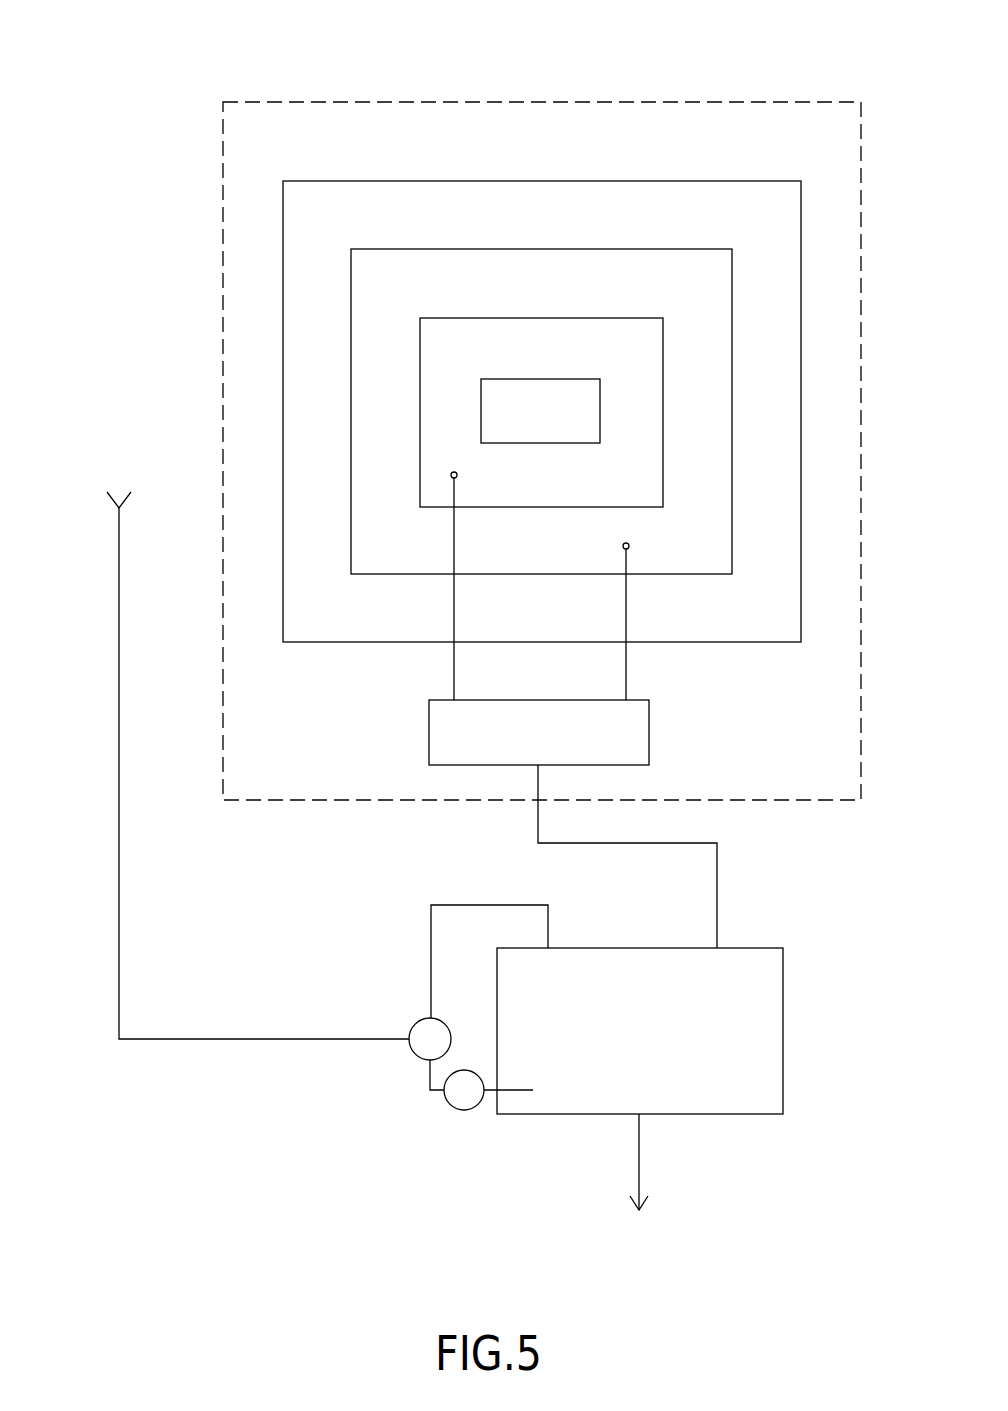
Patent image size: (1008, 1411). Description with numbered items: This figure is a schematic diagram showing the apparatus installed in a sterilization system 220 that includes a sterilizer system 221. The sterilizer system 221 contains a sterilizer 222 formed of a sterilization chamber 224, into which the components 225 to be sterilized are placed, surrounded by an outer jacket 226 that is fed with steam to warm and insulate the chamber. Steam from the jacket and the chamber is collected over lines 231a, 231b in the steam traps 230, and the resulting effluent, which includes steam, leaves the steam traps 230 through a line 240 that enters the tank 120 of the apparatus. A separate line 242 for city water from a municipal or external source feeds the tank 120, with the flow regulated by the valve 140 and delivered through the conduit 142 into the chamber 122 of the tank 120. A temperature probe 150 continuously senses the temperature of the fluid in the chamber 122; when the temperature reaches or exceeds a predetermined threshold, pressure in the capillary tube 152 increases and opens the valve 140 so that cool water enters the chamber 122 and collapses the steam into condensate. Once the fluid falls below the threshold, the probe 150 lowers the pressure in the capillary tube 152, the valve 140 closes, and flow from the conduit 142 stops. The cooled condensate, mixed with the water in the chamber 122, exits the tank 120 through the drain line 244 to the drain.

The tank 120 is at (688, 1031).
The chamber 122 is at (660, 1043).
The valve 140 is at (418, 1022).
The conduit 142 is at (431, 944).
The temperature probe 150 is at (456, 1110).
The capillary tube 152 is at (428, 1076).
The sterilization system 220 is at (132, 178).
The sterilizer system 221 is at (345, 100).
The sterilizer 222 is at (395, 181).
The sterilization chamber 224 is at (455, 282).
The components 225 is at (565, 422).
The outer jacket 226 is at (622, 249).
The steam traps 230 is at (649, 722).
The line 231a is at (454, 530).
The line 231b is at (626, 600).
The line 240 is at (718, 870).
The line 242 is at (119, 830).
The drain line 244 is at (641, 1150).